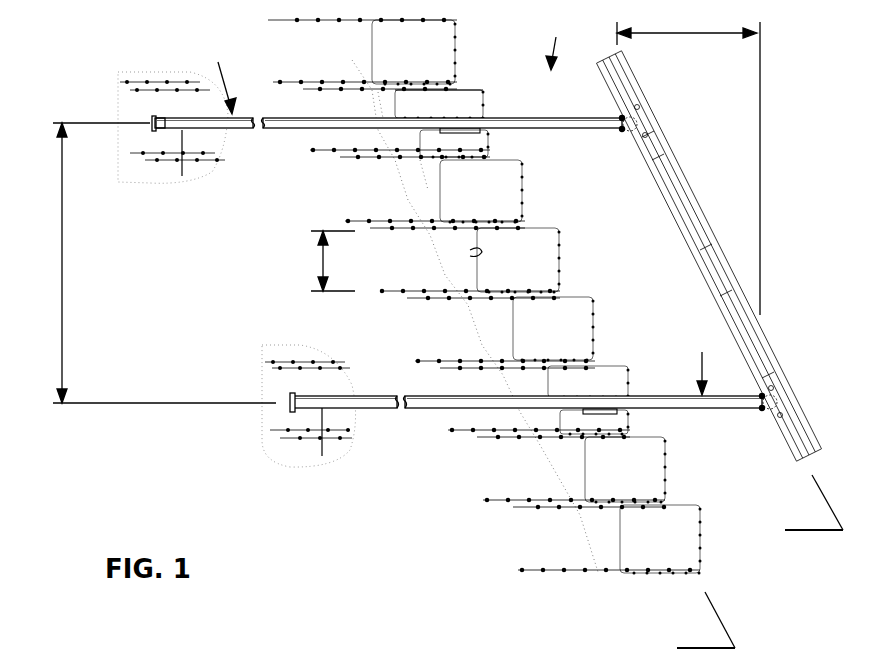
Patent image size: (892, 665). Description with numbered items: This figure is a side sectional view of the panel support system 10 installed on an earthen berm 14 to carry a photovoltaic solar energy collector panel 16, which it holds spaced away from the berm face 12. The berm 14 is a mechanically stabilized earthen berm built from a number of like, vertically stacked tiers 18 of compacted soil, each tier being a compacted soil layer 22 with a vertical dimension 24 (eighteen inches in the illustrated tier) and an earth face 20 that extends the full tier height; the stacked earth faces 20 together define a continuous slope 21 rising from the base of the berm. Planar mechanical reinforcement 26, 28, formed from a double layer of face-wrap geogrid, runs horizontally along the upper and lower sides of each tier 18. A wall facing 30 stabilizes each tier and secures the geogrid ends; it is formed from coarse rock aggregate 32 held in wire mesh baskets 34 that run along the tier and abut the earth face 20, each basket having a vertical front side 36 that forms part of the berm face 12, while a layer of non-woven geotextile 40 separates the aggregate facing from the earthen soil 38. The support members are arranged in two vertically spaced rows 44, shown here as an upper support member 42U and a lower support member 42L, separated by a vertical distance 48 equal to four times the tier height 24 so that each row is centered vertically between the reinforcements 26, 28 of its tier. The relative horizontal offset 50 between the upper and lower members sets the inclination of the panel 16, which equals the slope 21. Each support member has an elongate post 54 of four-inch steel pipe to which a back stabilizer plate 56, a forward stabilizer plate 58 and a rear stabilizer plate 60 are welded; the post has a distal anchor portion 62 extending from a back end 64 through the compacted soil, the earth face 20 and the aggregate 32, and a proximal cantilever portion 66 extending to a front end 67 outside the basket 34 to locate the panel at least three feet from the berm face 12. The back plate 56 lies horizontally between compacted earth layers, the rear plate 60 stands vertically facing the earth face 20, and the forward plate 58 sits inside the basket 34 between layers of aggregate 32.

The panel support system 10 is at (560, 41).
The berm face 12 is at (596, 337).
The earthen berm 14 is at (336, 391).
The solar energy collector panel 16 is at (675, 158).
The tier 18 is at (560, 265).
The earth face 20 is at (478, 252).
The slope 21 is at (700, 648).
The compacted soil layer 22 is at (440, 238).
The vertical dimension 24 is at (318, 262).
The mechanical reinforcement 26 is at (398, 292).
The mechanical reinforcement 28 is at (402, 230).
The wall facing 30 is at (527, 200).
The rock aggregate 32 is at (462, 94).
The wire mesh basket 34 is at (488, 100).
The vertical front side 36 is at (490, 104).
The earthen soil 38 is at (395, 106).
The non-woven geotextile 40 is at (438, 170).
The upper support member 42U is at (240, 128).
The lower support member 42L is at (428, 410).
The row 44 is at (460, 217).
The vertical distance 48 is at (62, 252).
The horizontal offset 50 is at (688, 40).
The post 54 is at (273, 128).
The back stabilizer plate 56 is at (175, 140).
The forward stabilizer plate 58 is at (455, 132).
The rear stabilizer plate 60 is at (150, 118).
The distal anchor portion 62 is at (290, 118).
The back end 64 is at (155, 118).
The proximal cantilever portion 66 is at (577, 118).
The front end 67 is at (624, 132).